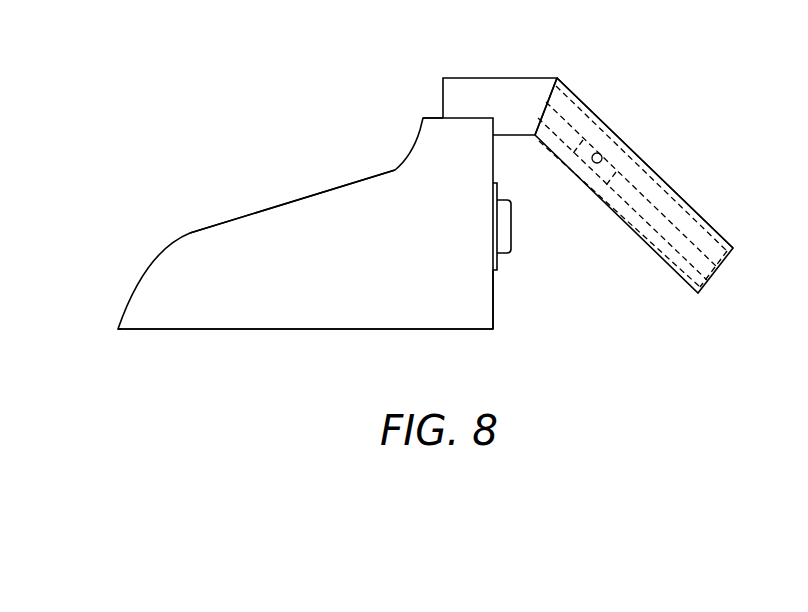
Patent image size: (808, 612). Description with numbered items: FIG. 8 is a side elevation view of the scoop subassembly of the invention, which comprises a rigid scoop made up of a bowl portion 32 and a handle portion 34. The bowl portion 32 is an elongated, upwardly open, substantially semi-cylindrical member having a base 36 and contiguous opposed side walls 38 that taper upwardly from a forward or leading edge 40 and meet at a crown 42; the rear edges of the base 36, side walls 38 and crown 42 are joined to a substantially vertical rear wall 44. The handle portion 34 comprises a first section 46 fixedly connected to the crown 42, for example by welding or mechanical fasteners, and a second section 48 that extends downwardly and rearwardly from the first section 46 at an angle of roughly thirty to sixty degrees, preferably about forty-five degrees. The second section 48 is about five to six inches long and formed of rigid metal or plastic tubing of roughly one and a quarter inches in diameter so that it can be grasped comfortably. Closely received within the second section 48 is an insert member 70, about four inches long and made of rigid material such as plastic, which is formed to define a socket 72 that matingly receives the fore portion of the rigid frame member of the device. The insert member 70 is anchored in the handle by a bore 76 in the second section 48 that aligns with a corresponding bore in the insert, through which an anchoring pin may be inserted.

The bowl portion 32 is at (400, 163).
The handle portion 34 is at (545, 74).
The base 36 is at (247, 329).
The side walls 38 is at (252, 235).
The leading edge 40 is at (118, 329).
The crown 42 is at (440, 116).
The rear wall 44 is at (495, 308).
The first section 46 is at (492, 87).
The second section 48 is at (578, 108).
The insert member 70 is at (729, 250).
The socket 72 is at (628, 195).
The bore 76 is at (598, 152).